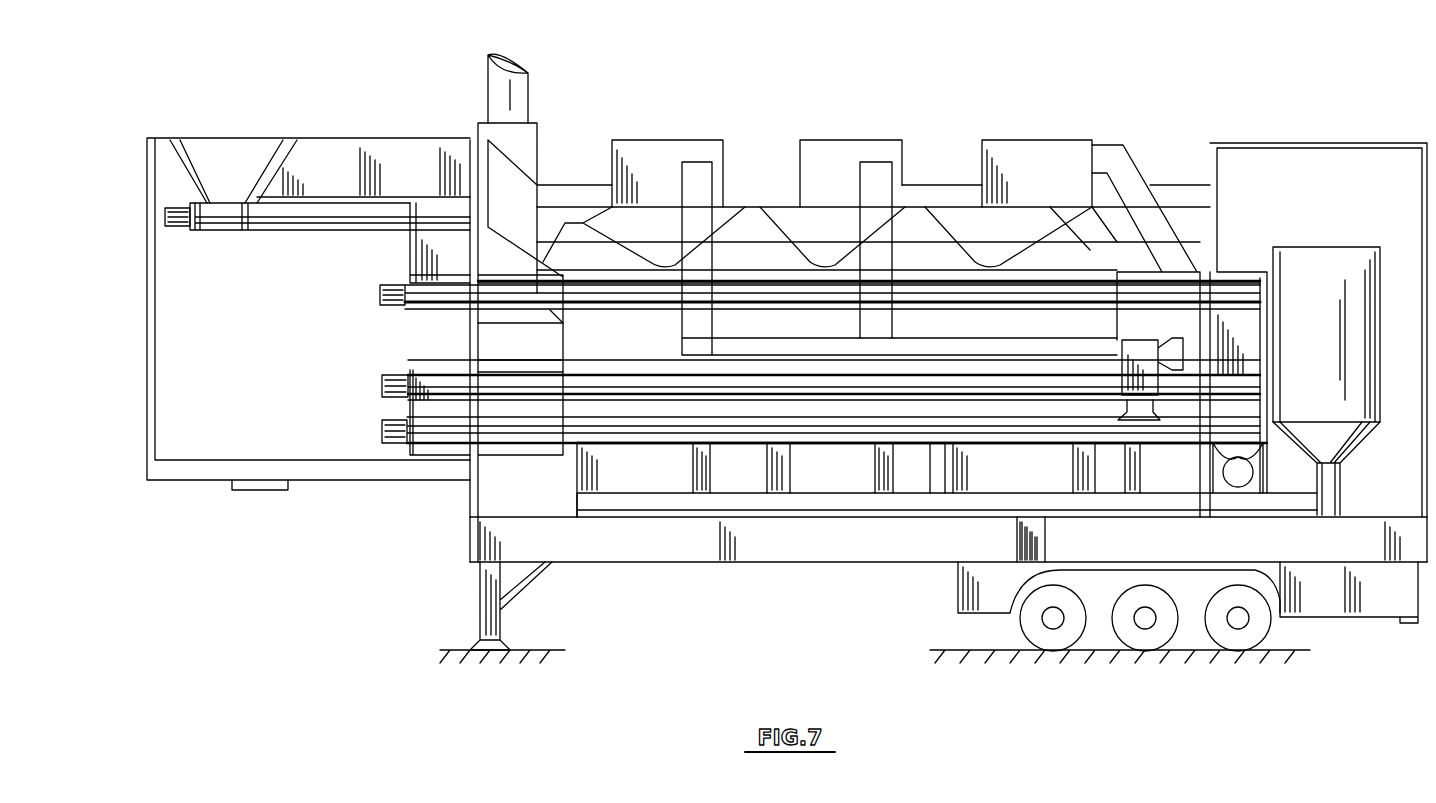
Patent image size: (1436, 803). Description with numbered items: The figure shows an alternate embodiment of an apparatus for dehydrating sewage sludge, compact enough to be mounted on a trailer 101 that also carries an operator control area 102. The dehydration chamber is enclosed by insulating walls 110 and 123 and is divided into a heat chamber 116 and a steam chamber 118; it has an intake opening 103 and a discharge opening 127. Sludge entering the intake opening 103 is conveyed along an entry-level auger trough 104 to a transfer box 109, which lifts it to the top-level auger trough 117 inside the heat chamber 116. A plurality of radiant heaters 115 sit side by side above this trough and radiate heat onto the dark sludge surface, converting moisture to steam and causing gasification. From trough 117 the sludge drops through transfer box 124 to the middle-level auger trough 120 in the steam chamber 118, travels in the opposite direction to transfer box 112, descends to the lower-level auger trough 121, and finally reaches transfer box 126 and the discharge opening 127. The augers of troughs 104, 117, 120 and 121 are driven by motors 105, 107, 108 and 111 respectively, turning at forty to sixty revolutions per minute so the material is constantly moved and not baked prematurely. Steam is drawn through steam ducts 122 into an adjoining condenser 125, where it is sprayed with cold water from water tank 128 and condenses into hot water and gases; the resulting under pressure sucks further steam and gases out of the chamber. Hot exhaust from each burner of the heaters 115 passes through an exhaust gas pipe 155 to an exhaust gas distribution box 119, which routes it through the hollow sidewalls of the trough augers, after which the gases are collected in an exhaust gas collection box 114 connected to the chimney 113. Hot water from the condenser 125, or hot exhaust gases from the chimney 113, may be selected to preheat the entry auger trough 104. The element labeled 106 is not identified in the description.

The trailer 101 is at (793, 563).
The operator control area 102 is at (170, 432).
The intake opening 103 is at (242, 150).
The auger trough 104 is at (315, 218).
The motor 105 is at (165, 215).
The hopper 106 is at (388, 150).
The motor 107 is at (380, 293).
The motor 108 is at (382, 385).
The transfer box 109 is at (447, 245).
The insulating wall 110 is at (472, 348).
The motor 111 is at (392, 445).
The transfer box 112 is at (444, 420).
The chimney 113 is at (528, 100).
The exhaust gas collection box 114 is at (510, 380).
The radiant heater 115 is at (722, 222).
The heat chamber 116 is at (920, 262).
The auger trough 117 is at (770, 275).
The steam chamber 118 is at (920, 365).
The exhaust gas distribution box 119 is at (1140, 337).
The auger trough 120 is at (870, 445).
The auger trough 121 is at (1000, 440).
The steam duct 122 is at (645, 492).
The insulating wall 123 is at (1222, 247).
The transfer box 124 is at (1240, 352).
The condenser 125 is at (1355, 257).
The transfer box 126 is at (1285, 425).
The discharge opening 127 is at (1245, 478).
The water tank 128 is at (1350, 612).
The exhaust gas pipe 155 is at (1110, 152).